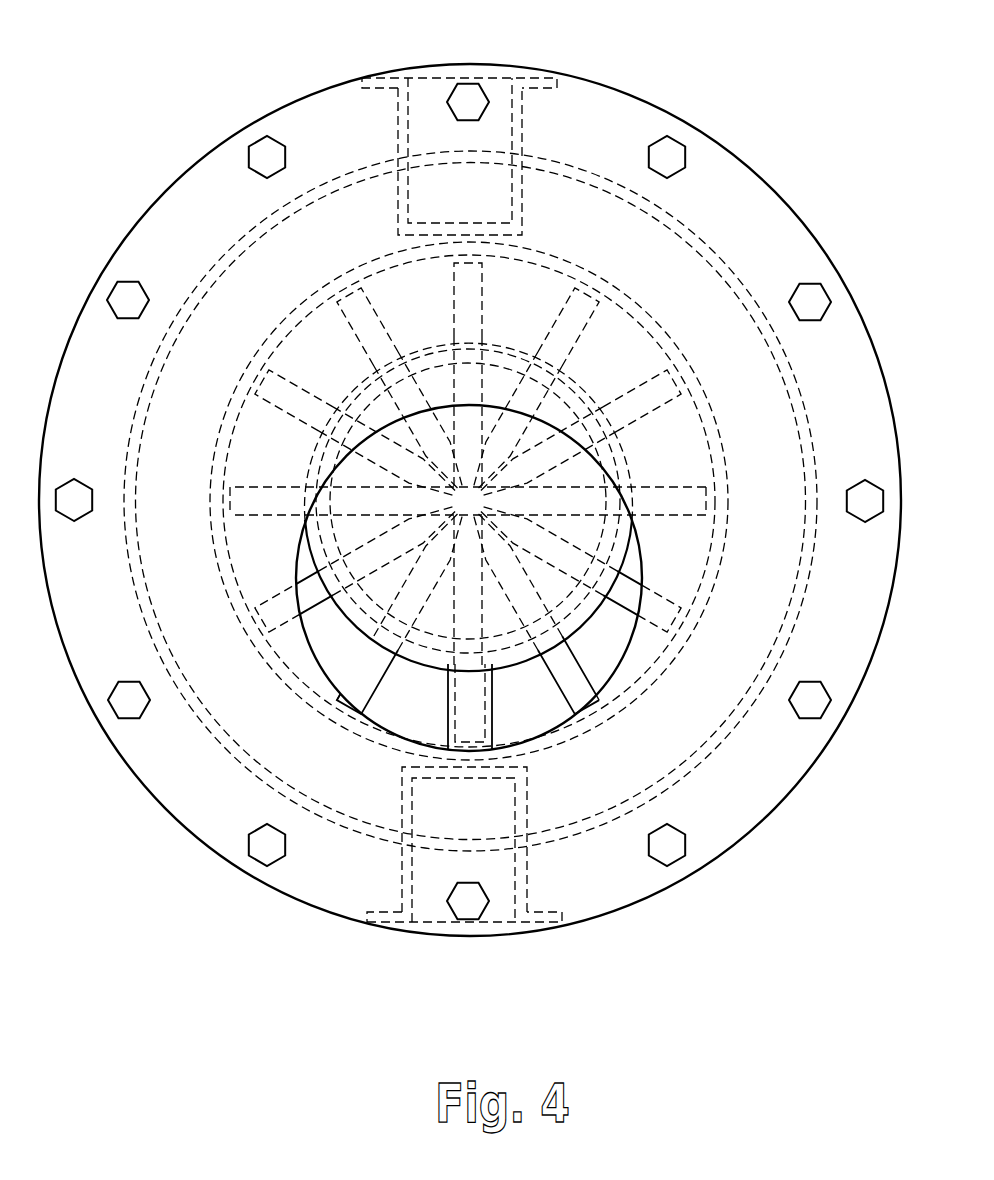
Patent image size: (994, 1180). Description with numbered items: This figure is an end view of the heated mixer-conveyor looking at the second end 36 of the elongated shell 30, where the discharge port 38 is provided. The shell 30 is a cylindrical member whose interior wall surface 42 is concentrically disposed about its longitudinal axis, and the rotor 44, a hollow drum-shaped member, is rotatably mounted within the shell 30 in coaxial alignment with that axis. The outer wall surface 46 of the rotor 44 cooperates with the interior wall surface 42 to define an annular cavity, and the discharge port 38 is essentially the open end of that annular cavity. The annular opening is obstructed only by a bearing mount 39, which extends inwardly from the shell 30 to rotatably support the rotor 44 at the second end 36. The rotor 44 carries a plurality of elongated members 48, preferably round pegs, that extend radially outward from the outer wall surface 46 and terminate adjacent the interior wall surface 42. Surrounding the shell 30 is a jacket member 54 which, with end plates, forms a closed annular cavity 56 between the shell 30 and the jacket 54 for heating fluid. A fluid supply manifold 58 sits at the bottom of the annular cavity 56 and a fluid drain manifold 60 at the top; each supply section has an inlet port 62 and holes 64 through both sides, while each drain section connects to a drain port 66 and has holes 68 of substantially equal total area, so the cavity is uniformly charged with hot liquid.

The elongated shell 30 is at (708, 100).
The second end 36 is at (741, 200).
The discharge port 38 is at (612, 678).
The bearing mount 39 is at (293, 362).
The interior wall surface 42 is at (694, 590).
The rotor 44 is at (493, 343).
The outer wall surface 46 is at (570, 387).
The elongated members 48 is at (322, 607).
The jacket member 54 is at (812, 538).
The annular cavity 56 is at (135, 493).
The fluid supply manifolds 58 is at (390, 782).
The fluid drain manifolds 60 is at (523, 218).
The inlet port 62 is at (505, 928).
The holes 64 is at (537, 818).
The drain ports 66 is at (489, 72).
The holes 68 is at (395, 196).